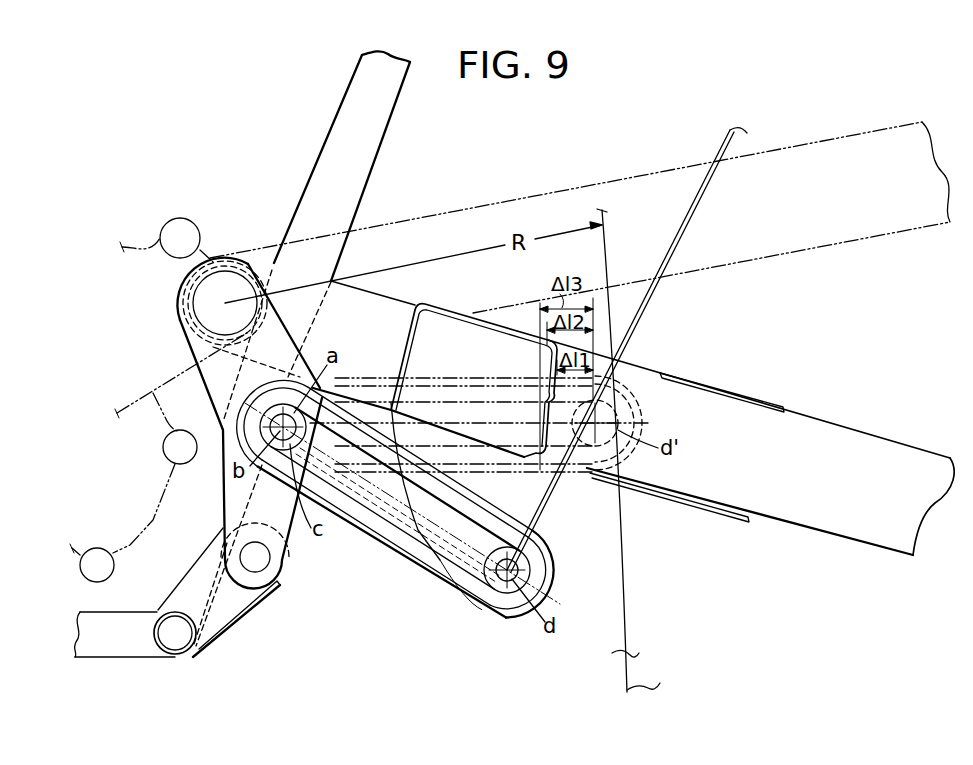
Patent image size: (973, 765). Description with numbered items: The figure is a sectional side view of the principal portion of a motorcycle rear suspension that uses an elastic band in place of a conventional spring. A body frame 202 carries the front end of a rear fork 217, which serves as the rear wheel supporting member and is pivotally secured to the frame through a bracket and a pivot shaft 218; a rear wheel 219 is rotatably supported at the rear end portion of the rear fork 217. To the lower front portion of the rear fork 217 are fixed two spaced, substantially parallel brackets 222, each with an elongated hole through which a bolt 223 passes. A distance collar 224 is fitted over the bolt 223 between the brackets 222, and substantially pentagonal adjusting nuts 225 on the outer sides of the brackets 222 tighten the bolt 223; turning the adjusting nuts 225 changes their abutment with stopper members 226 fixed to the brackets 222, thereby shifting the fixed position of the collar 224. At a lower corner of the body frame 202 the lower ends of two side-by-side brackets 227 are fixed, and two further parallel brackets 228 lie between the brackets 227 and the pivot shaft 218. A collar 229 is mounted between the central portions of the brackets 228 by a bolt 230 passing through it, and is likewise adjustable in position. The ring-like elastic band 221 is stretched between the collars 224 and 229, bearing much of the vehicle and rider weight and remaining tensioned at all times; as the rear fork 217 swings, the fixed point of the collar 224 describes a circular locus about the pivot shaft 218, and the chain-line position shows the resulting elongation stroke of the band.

The body frame 202 is at (103, 646).
The rear fork 217 is at (897, 458).
The pivot shaft 218 is at (231, 288).
The rear wheel 219 is at (620, 658).
The elastic band 221 is at (428, 575).
The brackets 222 is at (548, 507).
The bolt 223 is at (508, 583).
The distance collar 224 is at (531, 572).
The adjusting nuts 225 is at (488, 618).
The stopper members 226 is at (458, 573).
The brackets 227 is at (223, 632).
The brackets 228 is at (216, 369).
The collar 229 is at (283, 427).
The bolt 230 is at (277, 443).